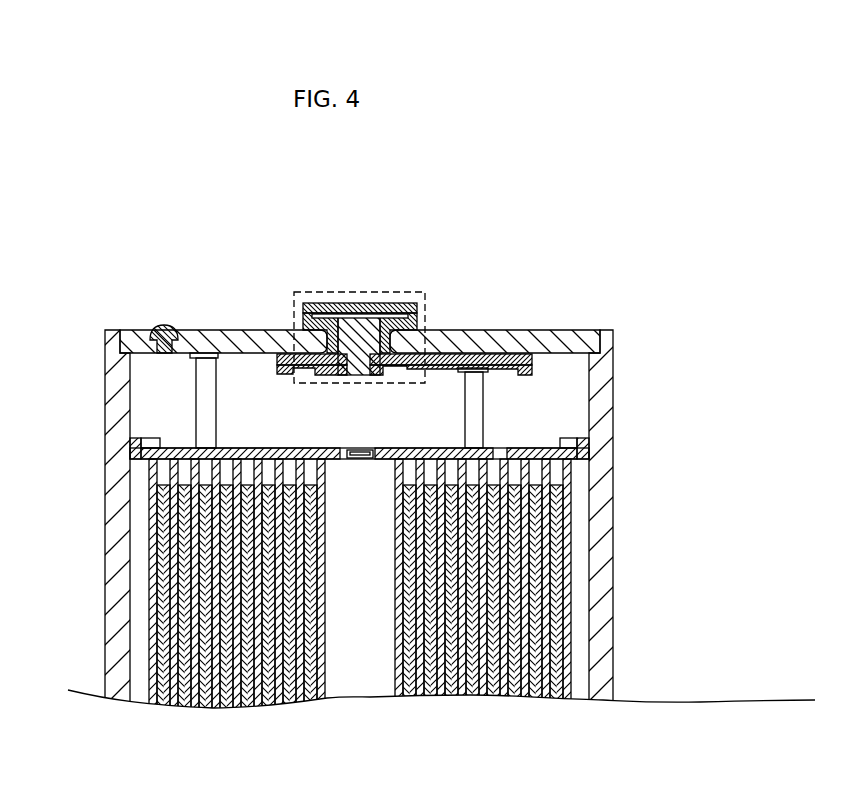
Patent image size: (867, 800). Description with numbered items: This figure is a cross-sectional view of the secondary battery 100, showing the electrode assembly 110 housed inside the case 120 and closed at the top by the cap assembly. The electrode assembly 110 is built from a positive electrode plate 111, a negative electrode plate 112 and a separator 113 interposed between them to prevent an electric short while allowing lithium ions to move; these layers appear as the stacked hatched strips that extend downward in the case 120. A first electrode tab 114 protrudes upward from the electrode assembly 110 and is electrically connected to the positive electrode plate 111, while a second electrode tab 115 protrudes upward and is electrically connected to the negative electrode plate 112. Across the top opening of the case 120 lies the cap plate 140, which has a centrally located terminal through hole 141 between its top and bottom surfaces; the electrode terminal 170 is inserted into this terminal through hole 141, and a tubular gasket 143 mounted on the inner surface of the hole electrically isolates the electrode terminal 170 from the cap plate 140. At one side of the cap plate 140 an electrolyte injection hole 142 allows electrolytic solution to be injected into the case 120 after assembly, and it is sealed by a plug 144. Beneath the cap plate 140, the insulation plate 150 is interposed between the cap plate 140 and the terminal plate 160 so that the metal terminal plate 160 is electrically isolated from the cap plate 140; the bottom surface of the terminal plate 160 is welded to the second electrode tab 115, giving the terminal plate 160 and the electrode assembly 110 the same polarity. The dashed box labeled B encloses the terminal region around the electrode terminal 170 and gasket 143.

The secondary battery 100 is at (427, 495).
The electrode assembly 110 is at (410, 607).
The positive electrode plate 111 is at (567, 697).
The negative electrode plate 112 is at (535, 697).
The separator 113 is at (553, 697).
The first electrode tab 114 is at (203, 393).
The second electrode tab 115 is at (478, 418).
The case 120 is at (605, 609).
The cap plate 140 is at (553, 330).
The terminal through hole 141 is at (320, 345).
The electrolyte injection hole 142 is at (155, 327).
The gasket 143 is at (413, 315).
The plug 144 is at (141, 308).
The insulation plate 150 is at (523, 375).
The terminal plate 160 is at (498, 353).
The electrode terminal 170 is at (330, 308).
The region B is at (372, 290).